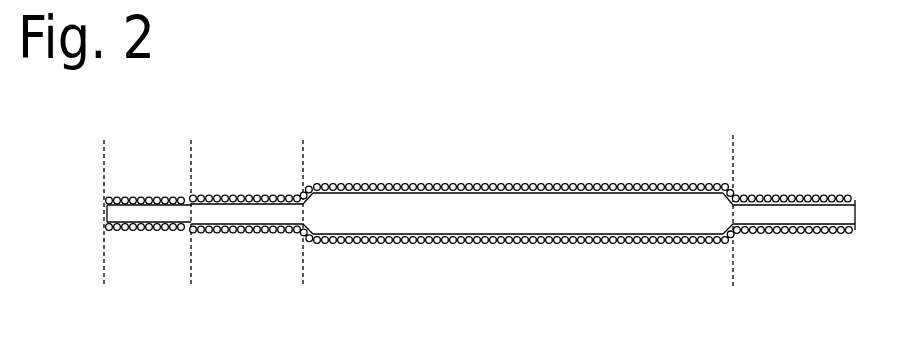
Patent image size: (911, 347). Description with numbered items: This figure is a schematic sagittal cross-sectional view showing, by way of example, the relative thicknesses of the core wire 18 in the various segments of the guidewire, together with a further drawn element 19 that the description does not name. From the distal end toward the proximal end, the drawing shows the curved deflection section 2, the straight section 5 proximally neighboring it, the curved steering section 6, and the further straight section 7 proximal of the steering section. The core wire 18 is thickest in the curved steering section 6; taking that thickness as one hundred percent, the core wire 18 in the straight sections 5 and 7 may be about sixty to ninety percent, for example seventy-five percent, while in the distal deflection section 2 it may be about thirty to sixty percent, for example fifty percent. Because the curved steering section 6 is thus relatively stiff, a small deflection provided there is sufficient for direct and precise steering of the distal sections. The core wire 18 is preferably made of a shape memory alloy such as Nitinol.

The curved deflection section 2 is at (150, 217).
The straight section 5 is at (252, 217).
The curved steering section 6 is at (578, 218).
The further straight section 7 is at (806, 218).
The core wire 18 is at (396, 182).
The inner liner 19 is at (481, 187).